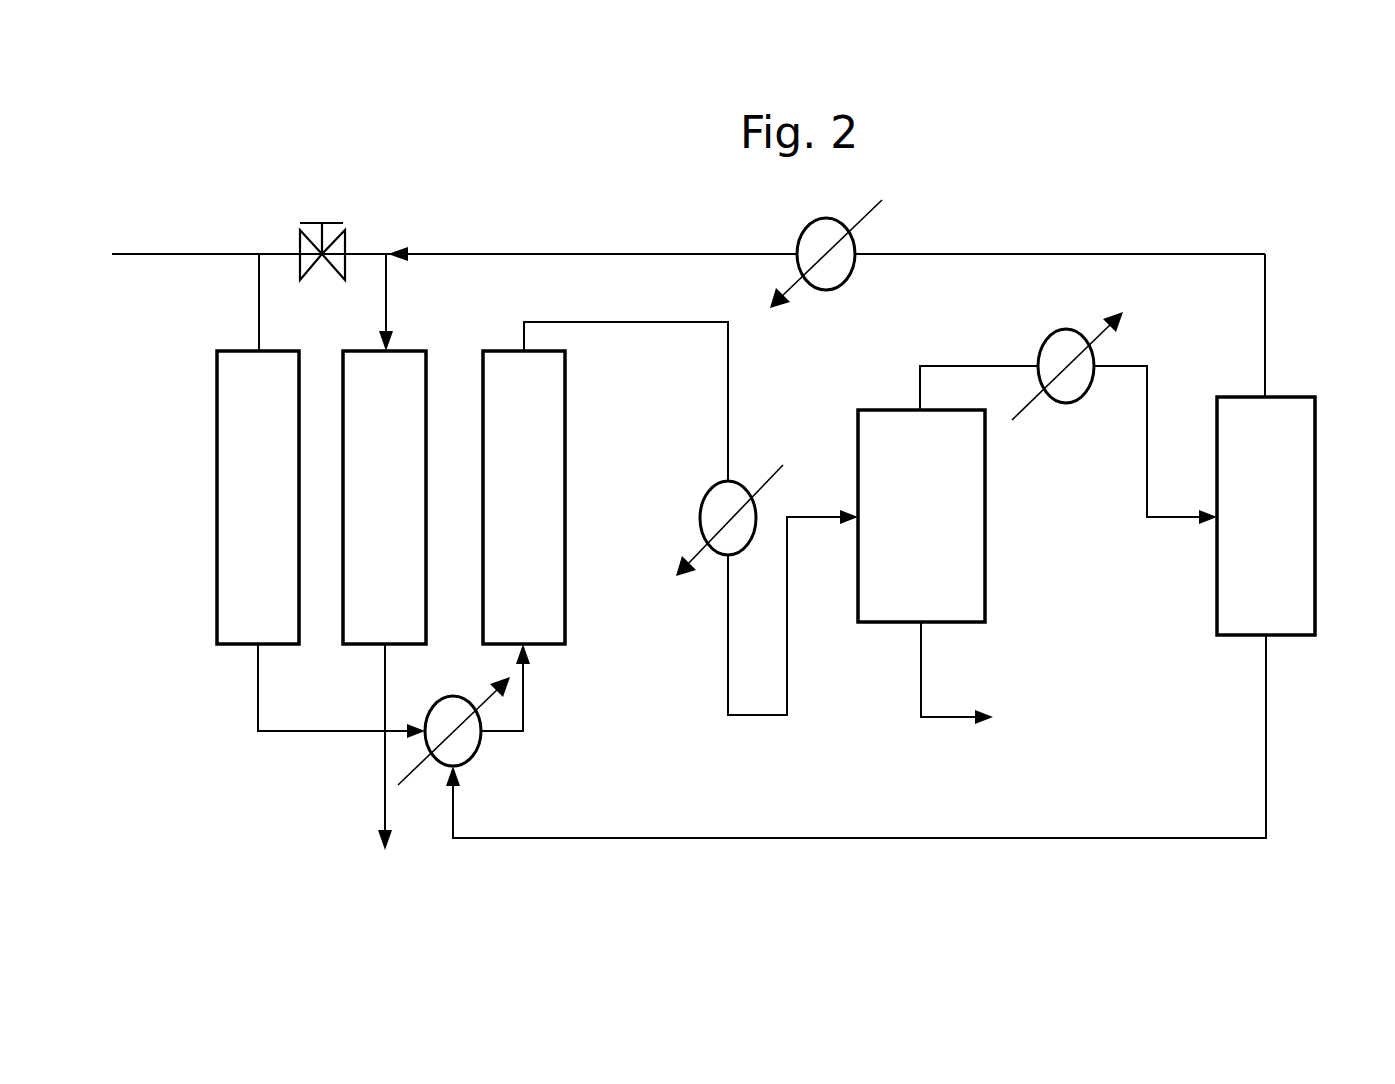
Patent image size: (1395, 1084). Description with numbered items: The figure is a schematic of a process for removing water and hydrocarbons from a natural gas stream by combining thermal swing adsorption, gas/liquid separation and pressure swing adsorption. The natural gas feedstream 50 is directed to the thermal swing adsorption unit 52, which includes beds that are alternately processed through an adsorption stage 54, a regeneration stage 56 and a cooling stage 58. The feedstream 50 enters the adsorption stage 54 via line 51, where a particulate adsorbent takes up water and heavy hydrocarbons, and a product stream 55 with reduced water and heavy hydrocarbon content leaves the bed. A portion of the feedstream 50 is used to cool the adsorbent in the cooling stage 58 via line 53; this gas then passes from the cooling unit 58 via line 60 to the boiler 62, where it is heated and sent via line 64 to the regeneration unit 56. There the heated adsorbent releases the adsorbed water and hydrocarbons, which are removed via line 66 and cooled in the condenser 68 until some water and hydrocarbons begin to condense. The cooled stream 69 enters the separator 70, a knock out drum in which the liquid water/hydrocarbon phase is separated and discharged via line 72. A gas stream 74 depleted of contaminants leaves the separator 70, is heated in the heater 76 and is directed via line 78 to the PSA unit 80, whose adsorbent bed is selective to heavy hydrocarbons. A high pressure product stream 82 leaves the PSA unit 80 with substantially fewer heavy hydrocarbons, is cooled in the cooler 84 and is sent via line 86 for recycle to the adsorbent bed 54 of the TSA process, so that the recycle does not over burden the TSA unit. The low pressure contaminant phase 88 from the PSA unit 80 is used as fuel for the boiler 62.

The natural gas feedstream 50 is at (181, 254).
The line 51 is at (386, 303).
The thermal swing adsorption unit 52 is at (187, 370).
The line 53 is at (259, 303).
The adsorption stage 54 is at (426, 427).
The product stream 55 is at (385, 800).
The regeneration stage 56 is at (565, 428).
The cooling stage 58 is at (217, 427).
The line 60 is at (283, 731).
The boiler 62 is at (480, 753).
The line 64 is at (523, 698).
The line 66 is at (622, 322).
The condenser 68 is at (701, 500).
The cooled stream 69 is at (787, 673).
The separator 70 is at (882, 410).
The line 72 is at (950, 720).
The gas stream 74 is at (953, 366).
The heater 76 is at (1045, 341).
The line 78 is at (1147, 453).
The PSA unit 80 is at (1315, 473).
The high pressure product stream 82 is at (1265, 330).
The cooler 84 is at (801, 230).
The line 86 is at (511, 254).
The low pressure contaminant phase 88 is at (1266, 740).